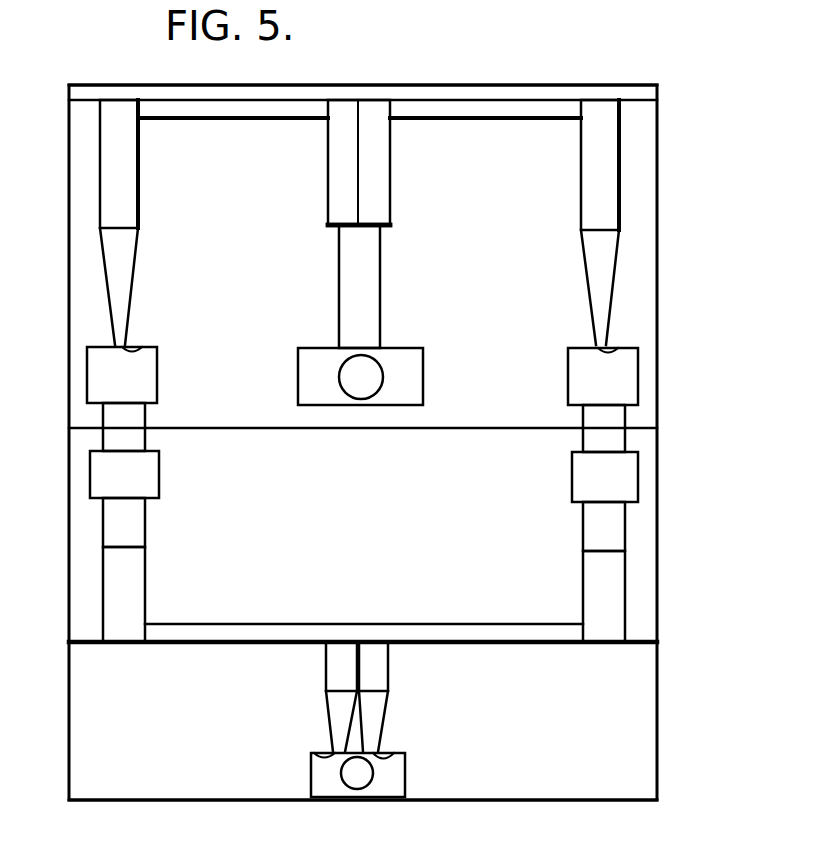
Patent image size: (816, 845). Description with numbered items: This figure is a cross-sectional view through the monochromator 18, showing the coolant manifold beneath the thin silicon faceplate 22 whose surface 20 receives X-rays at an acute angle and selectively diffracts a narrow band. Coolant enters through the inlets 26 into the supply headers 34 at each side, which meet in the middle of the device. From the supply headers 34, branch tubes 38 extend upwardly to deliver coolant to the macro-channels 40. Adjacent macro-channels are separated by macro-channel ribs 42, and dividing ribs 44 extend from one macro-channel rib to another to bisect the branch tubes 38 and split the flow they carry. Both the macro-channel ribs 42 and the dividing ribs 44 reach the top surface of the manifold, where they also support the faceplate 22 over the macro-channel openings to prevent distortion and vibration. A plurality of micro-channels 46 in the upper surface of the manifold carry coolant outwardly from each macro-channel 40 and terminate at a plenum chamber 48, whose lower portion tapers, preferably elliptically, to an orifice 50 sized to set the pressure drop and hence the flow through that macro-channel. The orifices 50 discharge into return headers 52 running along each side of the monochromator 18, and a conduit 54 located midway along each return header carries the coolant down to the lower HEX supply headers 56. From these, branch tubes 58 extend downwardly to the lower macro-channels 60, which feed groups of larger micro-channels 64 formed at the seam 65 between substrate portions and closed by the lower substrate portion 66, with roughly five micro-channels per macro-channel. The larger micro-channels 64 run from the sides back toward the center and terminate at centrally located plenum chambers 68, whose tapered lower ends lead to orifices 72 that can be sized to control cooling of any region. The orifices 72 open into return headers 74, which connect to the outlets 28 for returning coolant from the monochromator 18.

The monochromator 18 is at (686, 163).
The surface 20 is at (458, 85).
The faceplate 22 is at (657, 112).
The inlets 26 is at (383, 377).
The outlets 28 is at (341, 773).
The supply headers 34 is at (402, 349).
The branch tubes 38 is at (364, 305).
The macro-channels 40 is at (356, 168).
The macro-channel ribs 42 is at (335, 170).
The dividing ribs 44 is at (360, 207).
The micro-channels 46 is at (192, 121).
The plenum chamber 48 is at (140, 197).
The orifice 50 is at (140, 347).
The return headers 52 is at (160, 382).
The conduit 54 is at (140, 420).
The lower HEX supply headers 56 is at (160, 479).
The branch tubes 58 is at (143, 528).
The macro-channels 60 is at (138, 603).
The larger micro-channels 64 is at (237, 624).
The seam 65 is at (112, 643).
The lower substrate portion 66 is at (657, 737).
The plenum chambers 68 is at (326, 662).
The orifices 72 is at (316, 756).
The return headers 74 is at (406, 780).